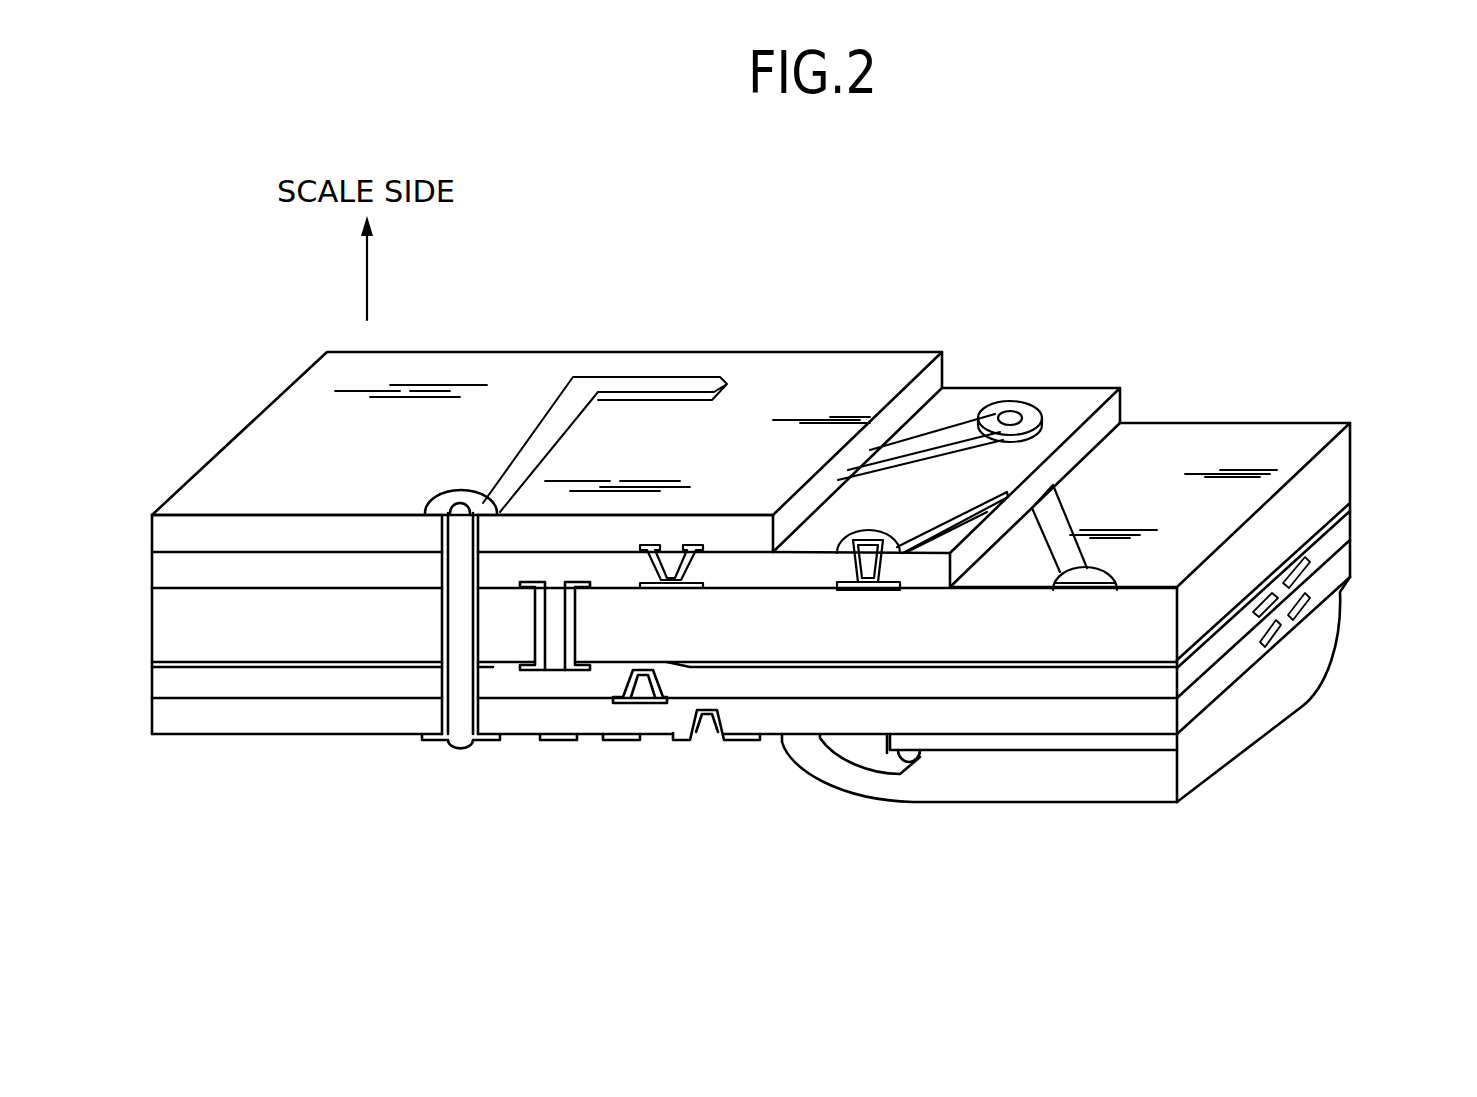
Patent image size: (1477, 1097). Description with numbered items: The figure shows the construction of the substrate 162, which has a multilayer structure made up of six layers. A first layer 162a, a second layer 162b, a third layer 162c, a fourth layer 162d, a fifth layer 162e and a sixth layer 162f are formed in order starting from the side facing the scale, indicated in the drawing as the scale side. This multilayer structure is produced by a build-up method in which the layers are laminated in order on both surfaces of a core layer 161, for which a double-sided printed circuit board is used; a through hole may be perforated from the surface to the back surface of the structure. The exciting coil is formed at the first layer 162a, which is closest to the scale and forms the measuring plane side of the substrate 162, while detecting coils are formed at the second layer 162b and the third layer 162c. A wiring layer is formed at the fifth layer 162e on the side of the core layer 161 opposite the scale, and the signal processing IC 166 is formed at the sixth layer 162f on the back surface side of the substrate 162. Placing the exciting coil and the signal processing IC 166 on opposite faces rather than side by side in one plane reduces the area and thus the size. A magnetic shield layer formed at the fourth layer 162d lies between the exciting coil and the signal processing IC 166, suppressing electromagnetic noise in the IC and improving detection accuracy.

The core layer 161 is at (1338, 467).
The substrate 162 is at (588, 332).
The first layer 162a is at (803, 372).
The second layer 162b is at (1055, 398).
The third layer 162c is at (1210, 447).
The fourth layer 162d is at (1347, 506).
The fifth layer 162e is at (1333, 553).
The sixth layer 162f is at (757, 745).
The signal processing IC 166 is at (1060, 792).